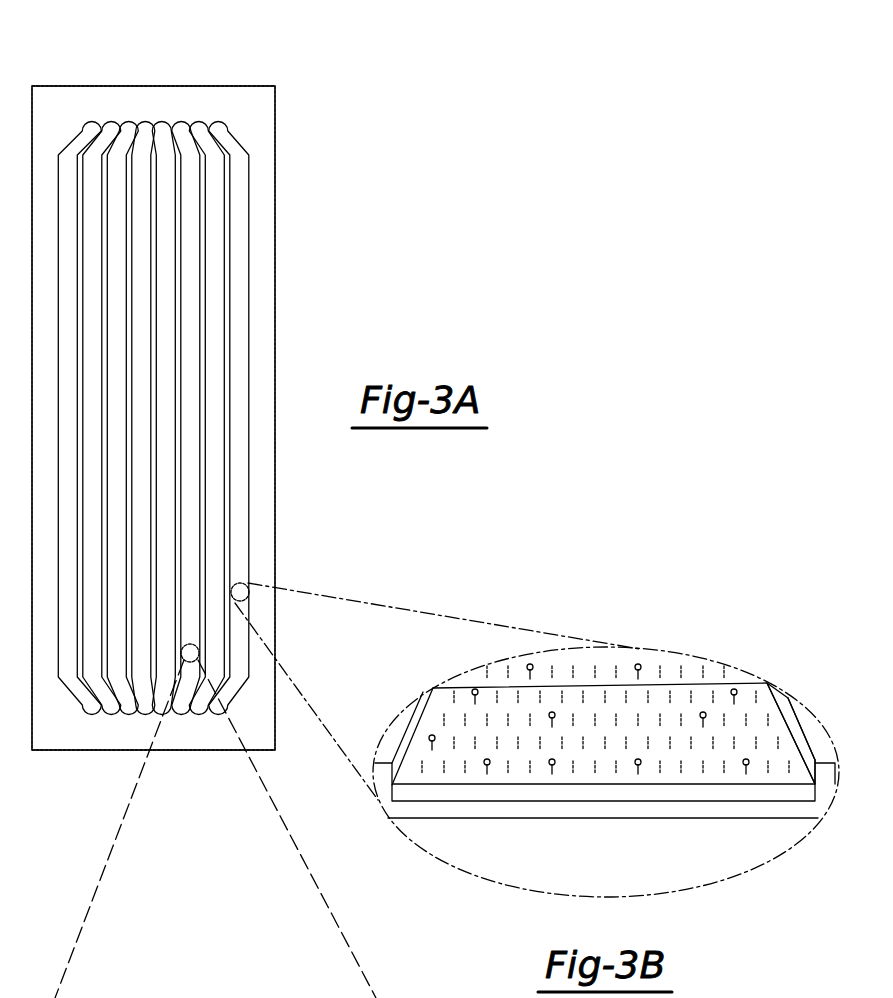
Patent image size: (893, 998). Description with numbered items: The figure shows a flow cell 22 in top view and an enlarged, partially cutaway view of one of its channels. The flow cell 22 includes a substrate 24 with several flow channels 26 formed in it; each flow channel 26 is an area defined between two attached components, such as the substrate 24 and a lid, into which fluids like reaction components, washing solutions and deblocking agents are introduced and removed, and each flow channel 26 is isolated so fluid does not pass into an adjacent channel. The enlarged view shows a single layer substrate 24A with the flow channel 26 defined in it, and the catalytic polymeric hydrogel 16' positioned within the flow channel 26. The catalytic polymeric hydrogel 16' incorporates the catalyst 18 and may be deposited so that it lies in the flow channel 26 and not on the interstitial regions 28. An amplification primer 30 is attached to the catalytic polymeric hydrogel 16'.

In FIG. 3A, the flow cell 22 is at (71, 58).
In FIG. 3A, the substrate 24 is at (232, 100).
In FIG. 3A, the flow channel 26 is at (240, 181).
In FIG. 3B, the flow channel 26 is at (405, 741).
In FIG. 3B, the catalyst 18 is at (640, 664).
In FIG. 3B, the amplification primer 30 is at (765, 683).
In FIG. 3B, the interstitial region 28 is at (812, 740).
In FIG. 3B, the catalytic polymeric hydrogel 16' is at (603, 826).
In FIG. 3B, the single layer substrate 24A is at (827, 786).